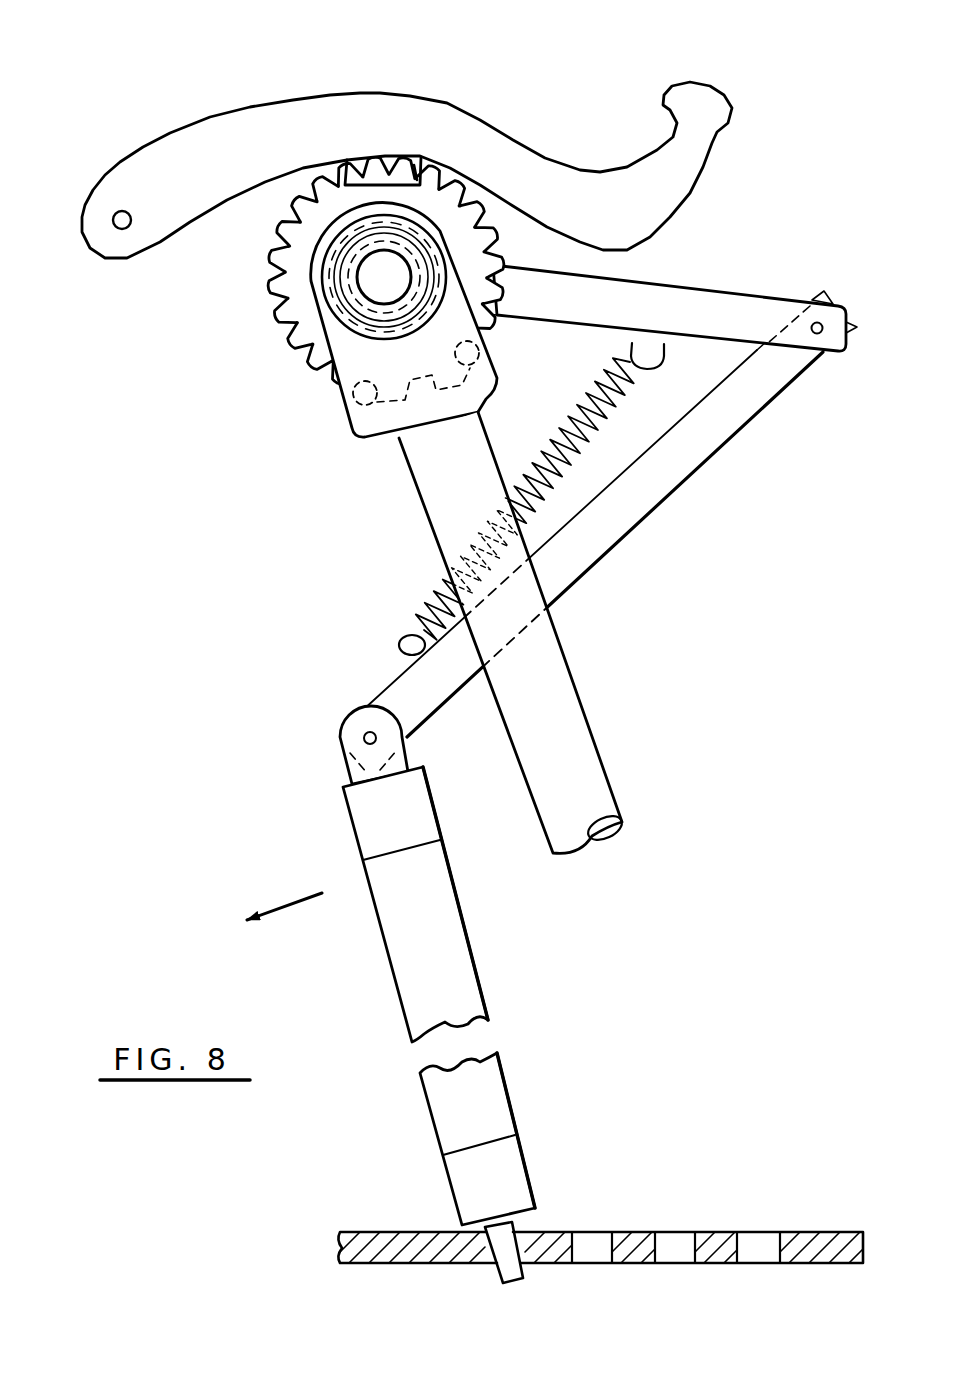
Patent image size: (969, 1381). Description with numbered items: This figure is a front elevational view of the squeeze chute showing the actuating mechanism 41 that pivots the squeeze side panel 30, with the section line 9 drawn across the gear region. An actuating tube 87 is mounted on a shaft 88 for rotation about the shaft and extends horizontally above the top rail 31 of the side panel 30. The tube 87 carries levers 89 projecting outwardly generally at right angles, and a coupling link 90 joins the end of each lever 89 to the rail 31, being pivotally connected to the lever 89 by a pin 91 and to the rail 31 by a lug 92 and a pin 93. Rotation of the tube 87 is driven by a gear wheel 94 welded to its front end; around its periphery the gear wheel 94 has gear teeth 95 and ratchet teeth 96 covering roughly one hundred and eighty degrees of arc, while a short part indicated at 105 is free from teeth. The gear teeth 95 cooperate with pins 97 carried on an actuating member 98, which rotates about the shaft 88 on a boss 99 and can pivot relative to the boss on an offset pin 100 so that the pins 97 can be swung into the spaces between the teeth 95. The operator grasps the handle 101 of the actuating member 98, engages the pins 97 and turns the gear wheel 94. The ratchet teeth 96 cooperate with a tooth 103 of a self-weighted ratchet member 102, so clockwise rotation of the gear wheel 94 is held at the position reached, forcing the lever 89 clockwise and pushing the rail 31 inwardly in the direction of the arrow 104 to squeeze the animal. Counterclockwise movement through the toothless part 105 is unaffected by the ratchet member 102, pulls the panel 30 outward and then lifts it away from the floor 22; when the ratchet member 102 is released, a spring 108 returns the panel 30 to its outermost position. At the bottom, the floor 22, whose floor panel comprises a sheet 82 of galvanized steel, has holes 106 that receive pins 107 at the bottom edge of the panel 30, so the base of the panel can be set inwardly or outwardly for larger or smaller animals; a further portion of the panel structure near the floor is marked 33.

The section line 9- 9 is at (380, 70).
The floor structure 22 is at (392, 1222).
The squeeze side panel 30 is at (422, 904).
The top rail 31 is at (338, 800).
The lower cylinder section 33 is at (535, 1183).
The actuating mechanism 41 is at (180, 434).
The sheet 82 is at (718, 1226).
The actuating tube 87 is at (386, 292).
The shaft 88 is at (393, 318).
The levers 89 is at (692, 300).
The coupling link 90 is at (640, 505).
The pin 91 is at (815, 340).
The lug 92 is at (350, 770).
The pin 93 is at (365, 730).
The gear wheel 94 is at (296, 368).
The gear teeth 95 is at (504, 233).
The ratchet teeth 96 is at (266, 268).
The pins 97 is at (358, 418).
The actuating member 98 is at (372, 430).
The boss 99 is at (288, 335).
The pin 100 is at (283, 246).
The handle 101 is at (567, 753).
The ratchet member 102 is at (715, 100).
The ratchet tooth 103 is at (378, 152).
The arrow 104 is at (293, 893).
The toothless part of gear wheel 105 is at (420, 165).
The holes 106 is at (677, 1243).
The pins 107 is at (503, 1270).
The spring 108 is at (438, 593).